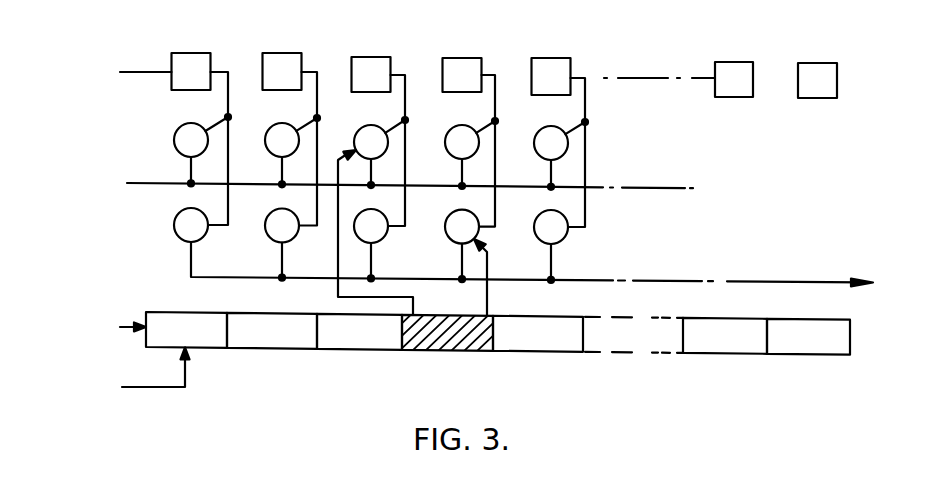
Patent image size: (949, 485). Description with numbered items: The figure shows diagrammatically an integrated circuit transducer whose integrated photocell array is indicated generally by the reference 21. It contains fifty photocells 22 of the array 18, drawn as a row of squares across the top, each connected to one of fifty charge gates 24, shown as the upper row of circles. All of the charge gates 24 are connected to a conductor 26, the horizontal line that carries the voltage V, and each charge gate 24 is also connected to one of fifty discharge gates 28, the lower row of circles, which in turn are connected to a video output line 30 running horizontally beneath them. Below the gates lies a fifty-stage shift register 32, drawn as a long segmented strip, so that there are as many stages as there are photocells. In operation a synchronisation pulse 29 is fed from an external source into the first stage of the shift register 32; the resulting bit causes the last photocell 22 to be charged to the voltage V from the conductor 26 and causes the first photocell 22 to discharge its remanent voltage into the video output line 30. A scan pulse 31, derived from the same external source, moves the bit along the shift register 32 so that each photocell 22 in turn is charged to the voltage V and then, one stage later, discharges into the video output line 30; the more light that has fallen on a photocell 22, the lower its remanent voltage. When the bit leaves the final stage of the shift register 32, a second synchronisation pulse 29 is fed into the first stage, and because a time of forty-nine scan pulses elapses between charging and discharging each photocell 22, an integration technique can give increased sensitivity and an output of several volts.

The integrated photocell array 18 is at (132, 72).
The photocell 22 is at (553, 142).
The charge gate 24 is at (426, 152).
The conductor 26 is at (155, 183).
The voltage V is at (128, 183).
The discharge gate 28 is at (416, 246).
The video output line 30 is at (780, 268).
The synchronisation pulse 29 is at (81, 341).
The scan pulse 31 is at (83, 401).
The integrated photocell array 21 is at (477, 399).
The shift register 32 is at (542, 334).